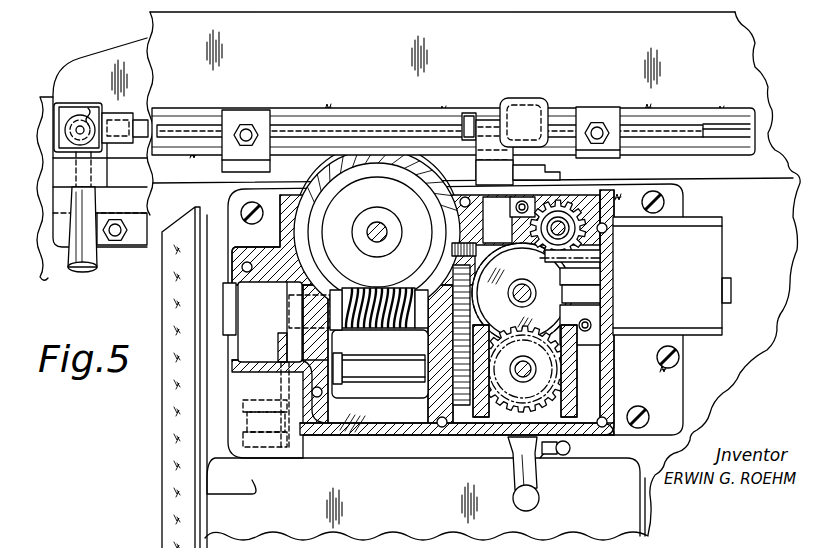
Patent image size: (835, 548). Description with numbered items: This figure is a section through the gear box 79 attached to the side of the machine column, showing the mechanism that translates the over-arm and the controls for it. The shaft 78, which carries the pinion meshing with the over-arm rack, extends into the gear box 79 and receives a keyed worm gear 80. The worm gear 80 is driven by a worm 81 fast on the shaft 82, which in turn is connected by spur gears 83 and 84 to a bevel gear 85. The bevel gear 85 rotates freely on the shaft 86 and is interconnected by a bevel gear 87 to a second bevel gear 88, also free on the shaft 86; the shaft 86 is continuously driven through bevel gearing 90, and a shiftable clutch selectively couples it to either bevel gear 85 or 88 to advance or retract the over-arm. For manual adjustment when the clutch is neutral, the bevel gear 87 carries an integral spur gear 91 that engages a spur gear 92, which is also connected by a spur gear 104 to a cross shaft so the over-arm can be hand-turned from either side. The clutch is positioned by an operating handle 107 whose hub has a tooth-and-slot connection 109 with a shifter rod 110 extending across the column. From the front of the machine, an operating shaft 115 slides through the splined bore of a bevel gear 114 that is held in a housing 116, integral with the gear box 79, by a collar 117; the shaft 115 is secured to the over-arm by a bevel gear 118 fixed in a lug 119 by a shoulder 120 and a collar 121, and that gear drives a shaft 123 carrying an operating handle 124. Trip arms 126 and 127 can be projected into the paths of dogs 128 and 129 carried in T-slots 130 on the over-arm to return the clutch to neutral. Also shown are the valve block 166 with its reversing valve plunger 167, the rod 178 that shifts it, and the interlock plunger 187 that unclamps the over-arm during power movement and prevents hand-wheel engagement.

The shaft 78 is at (382, 225).
The gear box 79 is at (676, 380).
The worm gear 80 is at (362, 197).
The worm 81 is at (363, 329).
The shaft 82 is at (407, 329).
The spur gear 83 is at (460, 280).
The spur gear 84 is at (448, 437).
The bevel gear 85 is at (476, 436).
The shaft 86 is at (376, 378).
The bevel gear 87 is at (500, 435).
The second bevel gear 88 is at (630, 413).
The bevel gearing 90 is at (284, 334).
The spur gear 91 is at (582, 378).
The spur gear 92 is at (560, 314).
The spur gear 104 is at (608, 251).
The operating handle 107 is at (539, 507).
The tooth-and-slot connection 109 is at (540, 458).
The shifter rod 110 is at (571, 448).
The bevel gear 114 is at (507, 108).
The operating shaft 115 is at (424, 135).
The housing 116 is at (488, 120).
The collar 117 is at (468, 112).
The bevel gear 118 is at (90, 110).
The lug 119 is at (118, 114).
The shoulder 120 is at (100, 152).
The collar 121 is at (150, 122).
The shaft 123 is at (80, 115).
The operating handle 124 is at (78, 268).
The arm 126 is at (482, 168).
The arm 127 is at (552, 166).
The dog 128 is at (570, 107).
The dog 129 is at (310, 160).
The T-slots 130 is at (726, 137).
The valve block 166 is at (716, 240).
The reversing valve plunger 167 is at (604, 292).
The rod 178 is at (513, 293).
The interlock plunger 187 is at (602, 267).